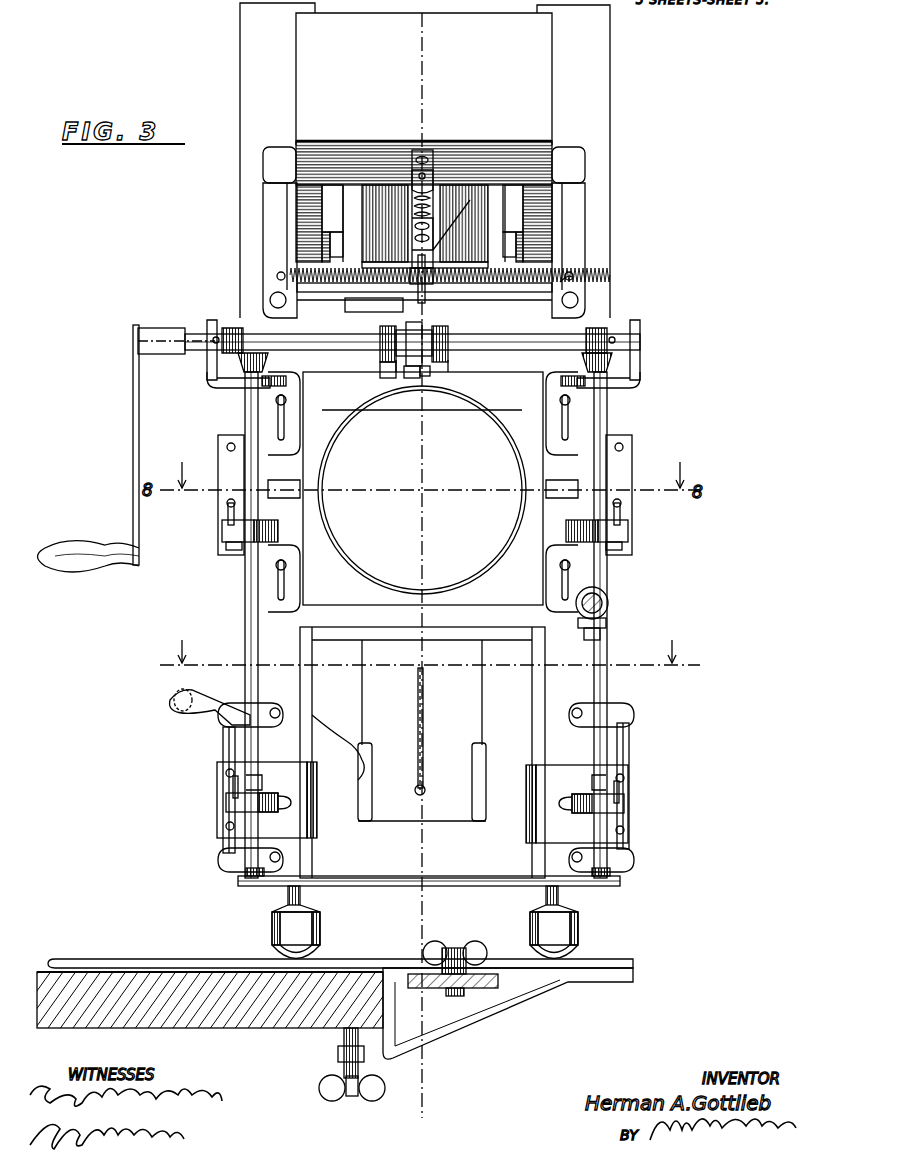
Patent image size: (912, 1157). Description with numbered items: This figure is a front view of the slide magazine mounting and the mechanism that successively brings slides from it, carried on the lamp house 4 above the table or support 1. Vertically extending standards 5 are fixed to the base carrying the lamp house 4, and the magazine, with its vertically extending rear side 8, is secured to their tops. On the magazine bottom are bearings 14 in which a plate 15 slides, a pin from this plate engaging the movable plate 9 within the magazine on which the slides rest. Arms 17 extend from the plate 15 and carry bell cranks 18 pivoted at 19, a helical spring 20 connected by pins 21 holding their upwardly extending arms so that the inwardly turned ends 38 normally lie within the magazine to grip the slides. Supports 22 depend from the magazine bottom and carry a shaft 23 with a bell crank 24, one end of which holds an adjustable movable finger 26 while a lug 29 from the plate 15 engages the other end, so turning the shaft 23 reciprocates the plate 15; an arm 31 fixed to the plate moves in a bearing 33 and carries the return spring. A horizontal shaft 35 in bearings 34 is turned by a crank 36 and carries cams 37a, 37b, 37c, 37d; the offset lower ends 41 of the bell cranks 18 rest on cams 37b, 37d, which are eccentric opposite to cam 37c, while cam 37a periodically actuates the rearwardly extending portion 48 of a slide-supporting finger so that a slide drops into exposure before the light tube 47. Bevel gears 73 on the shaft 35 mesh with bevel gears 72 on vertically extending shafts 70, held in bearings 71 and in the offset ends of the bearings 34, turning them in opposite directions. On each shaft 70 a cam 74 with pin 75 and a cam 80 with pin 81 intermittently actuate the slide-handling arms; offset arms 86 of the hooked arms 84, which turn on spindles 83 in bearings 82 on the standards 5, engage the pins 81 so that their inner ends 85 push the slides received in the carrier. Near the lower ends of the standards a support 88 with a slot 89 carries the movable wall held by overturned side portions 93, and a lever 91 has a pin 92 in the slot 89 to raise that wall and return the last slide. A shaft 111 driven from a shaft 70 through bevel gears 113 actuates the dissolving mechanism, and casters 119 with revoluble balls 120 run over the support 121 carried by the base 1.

The table or support 1 is at (232, 1028).
The lamp house 4 is at (440, 1110).
The standards 5 is at (240, 118).
The rear side 8 is at (424, 79).
The movable plate 9 is at (422, 658).
The bearings 14 is at (423, 223).
The plate 15 is at (430, 230).
The arms 17 is at (296, 288).
The bell cranks 18 is at (276, 216).
The pivot 19 is at (270, 300).
The helical spring 20 is at (563, 272).
The pins 21 is at (280, 271).
The supports 22 is at (336, 290).
The spindle or shaft 23 is at (388, 298).
The bell crank 24 is at (418, 268).
The movable finger 26 is at (430, 306).
The lug 29 is at (470, 200).
The arm 31 is at (430, 194).
The bearing 33 is at (418, 186).
The bearings 34 is at (207, 366).
The shaft 35 is at (534, 350).
The crank 36 is at (133, 406).
The cam 37a is at (390, 364).
The cam 37b is at (412, 380).
The cam 37c is at (428, 370).
The cam 37d is at (448, 372).
The inwardly turned ends 38 is at (272, 150).
The offset ends 41 is at (380, 322).
The tube 47 is at (372, 572).
The rearwardly extending portion 48 is at (372, 372).
The vertically extending shafts 70 is at (258, 652).
The bearings 71 is at (240, 884).
The bevel gears 72 is at (250, 350).
The bevel gears 73 is at (226, 378).
The cams 74 is at (226, 532).
The pins 75 is at (228, 509).
The cams 80 is at (226, 805).
The pins 81 is at (226, 784).
The bearings 82 is at (222, 722).
The spindles 83 is at (223, 752).
The hooked arms 84 is at (290, 770).
The inner ends 85 is at (312, 830).
The offset arms 86 is at (258, 776).
The support 88 is at (458, 803).
The slot 89 is at (426, 726).
The lever 91 is at (345, 728).
The pin 92 is at (415, 790).
The overturned side portions 93 is at (360, 804).
The shaft 111 is at (610, 602).
The bevel gears 113 is at (606, 624).
The casters 119 is at (272, 934).
The revoluble balls 120 is at (548, 962).
The support 121 is at (120, 950).